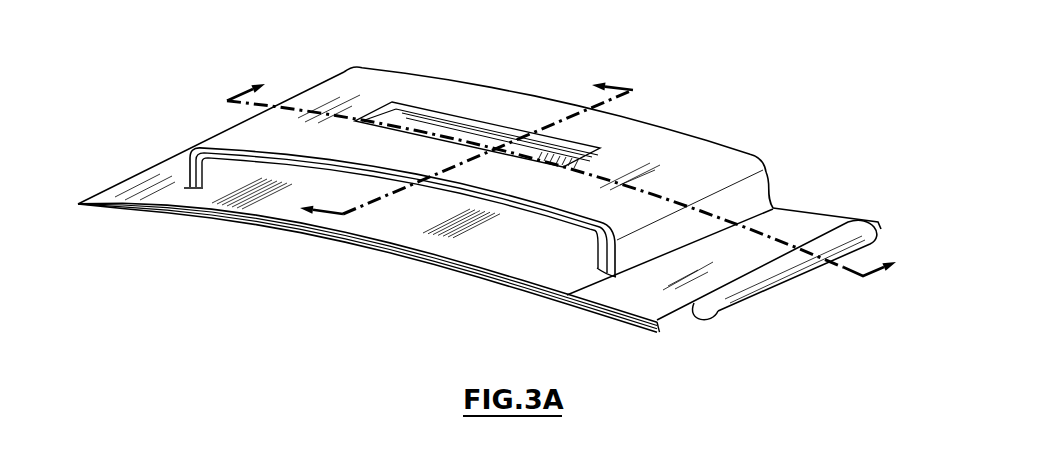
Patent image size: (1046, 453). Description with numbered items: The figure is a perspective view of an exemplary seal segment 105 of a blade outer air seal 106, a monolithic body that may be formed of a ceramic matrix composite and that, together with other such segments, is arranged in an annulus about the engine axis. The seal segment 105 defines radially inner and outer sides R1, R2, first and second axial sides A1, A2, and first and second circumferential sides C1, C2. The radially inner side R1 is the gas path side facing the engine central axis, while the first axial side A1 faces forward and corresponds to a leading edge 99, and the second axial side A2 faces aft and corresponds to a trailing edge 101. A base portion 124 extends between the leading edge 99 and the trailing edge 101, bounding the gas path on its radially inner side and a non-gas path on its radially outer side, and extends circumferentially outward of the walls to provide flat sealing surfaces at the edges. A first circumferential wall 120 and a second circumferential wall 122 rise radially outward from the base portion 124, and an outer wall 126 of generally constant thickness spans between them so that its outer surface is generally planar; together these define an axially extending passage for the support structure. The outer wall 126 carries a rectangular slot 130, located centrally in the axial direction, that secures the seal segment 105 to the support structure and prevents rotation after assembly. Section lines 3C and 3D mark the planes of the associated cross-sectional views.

The blade outer air seal 106 is at (154, 66).
The outer wall 126 is at (380, 90).
The slot 130 is at (600, 130).
The first circumferential wall 120 is at (183, 151).
The second circumferential wall 122 is at (773, 173).
The trailing edge 101 is at (830, 204).
The seal segment 105 is at (190, 218).
The leading edge 99 is at (133, 212).
The base portion 124 is at (258, 200).
The first circumferential side C1 is at (132, 177).
The second circumferential side C2 is at (687, 321).
The first axial side A1 is at (470, 273).
The second axial side A2 is at (778, 193).
The radially inner side R1 is at (547, 293).
The radially outer side R2 is at (530, 268).
The section line 3C is at (579, 170).
The section line 3D is at (451, 146).